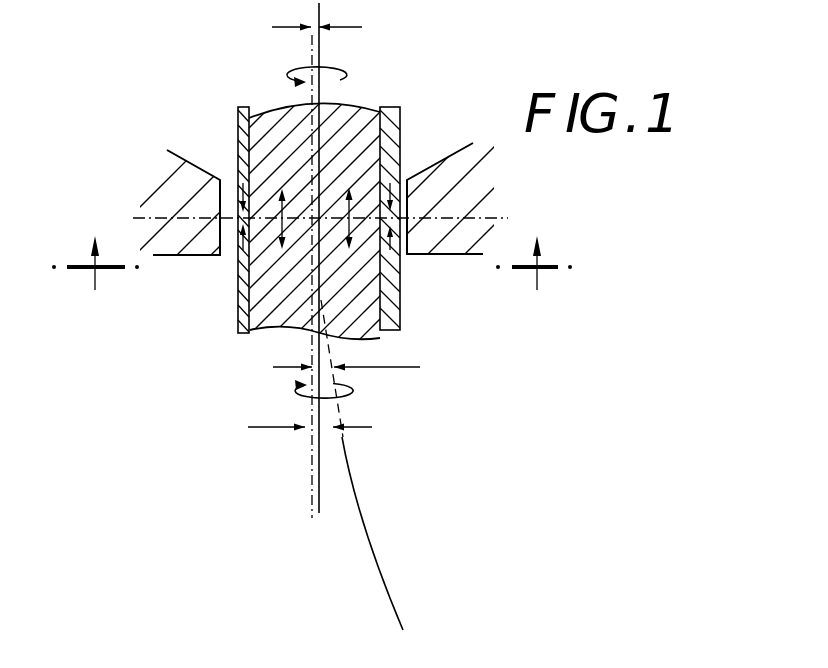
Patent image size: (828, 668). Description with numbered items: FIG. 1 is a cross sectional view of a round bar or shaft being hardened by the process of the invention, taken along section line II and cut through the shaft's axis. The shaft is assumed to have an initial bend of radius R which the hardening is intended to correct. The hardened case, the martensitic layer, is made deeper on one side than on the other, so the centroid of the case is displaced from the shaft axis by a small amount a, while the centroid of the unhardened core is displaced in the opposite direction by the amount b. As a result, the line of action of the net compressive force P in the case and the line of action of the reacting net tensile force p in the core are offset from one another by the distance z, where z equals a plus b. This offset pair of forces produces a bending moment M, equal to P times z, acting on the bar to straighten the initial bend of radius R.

The centroid displacement of unhardened core b is at (326, 31).
The bending moment M is at (307, 233).
The net compressive force in the case P is at (313, 206).
The net tensile force in the core p is at (312, 201).
The centroid displacement of hardened case a is at (346, 357).
The offset between lines of action z is at (310, 416).
The radius of initial bend R is at (615, 470).
The section line II- II is at (312, 247).